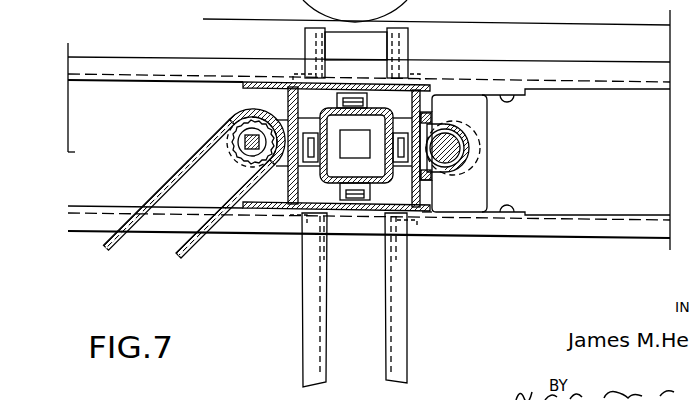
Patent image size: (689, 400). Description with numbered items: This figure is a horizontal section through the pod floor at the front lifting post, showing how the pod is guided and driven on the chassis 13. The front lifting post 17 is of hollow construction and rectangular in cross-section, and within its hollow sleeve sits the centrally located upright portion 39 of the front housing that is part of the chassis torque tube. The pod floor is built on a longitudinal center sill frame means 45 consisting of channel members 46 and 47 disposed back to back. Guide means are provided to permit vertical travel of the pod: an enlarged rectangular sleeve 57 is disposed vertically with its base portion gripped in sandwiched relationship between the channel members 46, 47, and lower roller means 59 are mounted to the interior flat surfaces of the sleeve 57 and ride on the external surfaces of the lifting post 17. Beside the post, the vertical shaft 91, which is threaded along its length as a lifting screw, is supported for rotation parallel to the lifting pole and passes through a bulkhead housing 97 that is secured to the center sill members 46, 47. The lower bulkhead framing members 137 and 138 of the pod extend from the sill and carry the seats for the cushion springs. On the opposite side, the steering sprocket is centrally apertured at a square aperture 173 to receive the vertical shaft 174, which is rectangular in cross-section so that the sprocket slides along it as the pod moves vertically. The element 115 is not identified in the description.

The longitudinal center sill frame means 45 is at (98, 51).
The channel member 47 is at (170, 42).
The drum 115 is at (293, 0).
The chassis 13 is at (598, 0).
The lower bulkhead framing member 137 is at (310, 43).
The rectangular sleeve 57 is at (376, 109).
The front lifting post 17 is at (323, 117).
The vertical shaft 174 is at (247, 142).
The square aperture 173 is at (253, 151).
The upright portion 39 is at (376, 146).
The lower roller means 59 is at (370, 195).
The vertical shaft 91 is at (452, 148).
The bulkhead housing 97 is at (490, 180).
The channel member 46 is at (72, 224).
The lower bulkhead framing member 138 is at (308, 333).